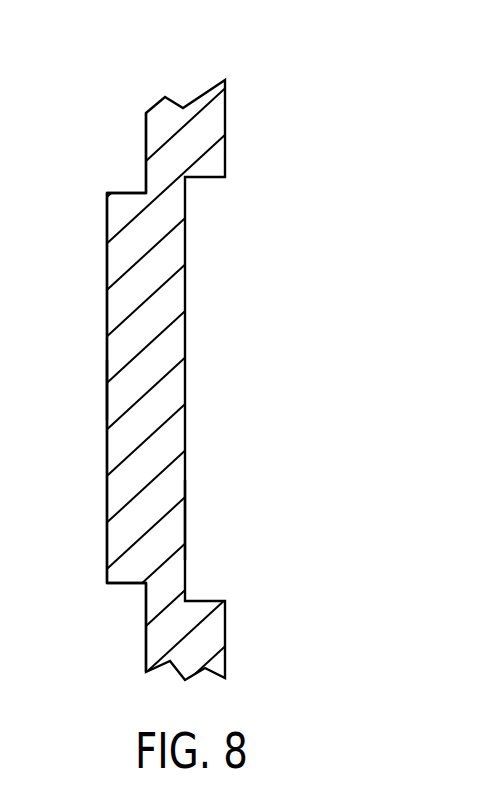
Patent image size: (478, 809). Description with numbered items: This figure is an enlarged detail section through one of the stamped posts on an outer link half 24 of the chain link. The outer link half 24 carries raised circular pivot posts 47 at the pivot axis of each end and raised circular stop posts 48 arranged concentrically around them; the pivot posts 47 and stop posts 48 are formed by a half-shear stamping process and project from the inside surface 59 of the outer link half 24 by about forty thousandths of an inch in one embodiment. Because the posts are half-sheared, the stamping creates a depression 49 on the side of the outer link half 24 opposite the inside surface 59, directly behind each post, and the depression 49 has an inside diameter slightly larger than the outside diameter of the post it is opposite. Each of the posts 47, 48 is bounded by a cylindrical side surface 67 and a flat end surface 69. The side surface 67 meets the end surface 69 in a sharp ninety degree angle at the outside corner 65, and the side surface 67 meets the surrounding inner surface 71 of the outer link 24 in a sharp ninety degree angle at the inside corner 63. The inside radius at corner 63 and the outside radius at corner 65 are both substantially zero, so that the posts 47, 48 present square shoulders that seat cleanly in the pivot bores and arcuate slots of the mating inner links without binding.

The outer link half 24 is at (190, 92).
The inside surface 59 is at (144, 138).
The inside corner 63 is at (143, 191).
The outside corner 65 is at (107, 194).
The pivot post 47 is at (56, 388).
The stop post 48 is at (104, 361).
The end surface 69 is at (107, 388).
The depression 49 is at (187, 514).
The side surface 67 is at (132, 585).
The inner surface 71 is at (146, 628).